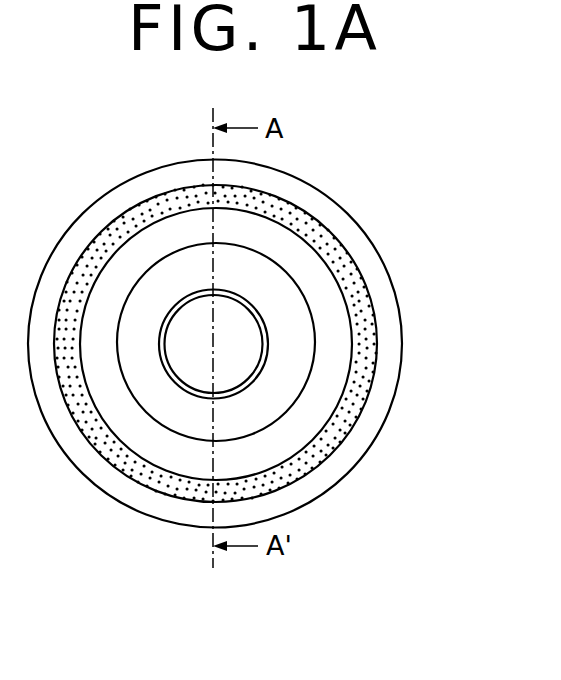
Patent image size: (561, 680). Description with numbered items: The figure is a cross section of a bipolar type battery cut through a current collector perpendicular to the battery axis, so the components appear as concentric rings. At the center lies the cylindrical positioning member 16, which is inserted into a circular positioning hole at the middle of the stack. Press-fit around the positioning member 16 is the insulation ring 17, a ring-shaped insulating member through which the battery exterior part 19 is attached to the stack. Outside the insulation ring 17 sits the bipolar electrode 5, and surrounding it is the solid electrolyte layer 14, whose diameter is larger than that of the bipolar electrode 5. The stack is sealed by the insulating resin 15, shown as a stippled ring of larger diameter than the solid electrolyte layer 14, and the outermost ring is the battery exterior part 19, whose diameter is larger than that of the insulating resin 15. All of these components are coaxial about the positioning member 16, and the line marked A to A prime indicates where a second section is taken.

The bipolar electrode 5 is at (292, 328).
The solid electrolyte layer 14 is at (333, 343).
The insulating resin 15 is at (363, 377).
The positioning member 16 is at (232, 362).
The insulation ring 17 is at (257, 303).
The battery exterior part 19 is at (357, 442).